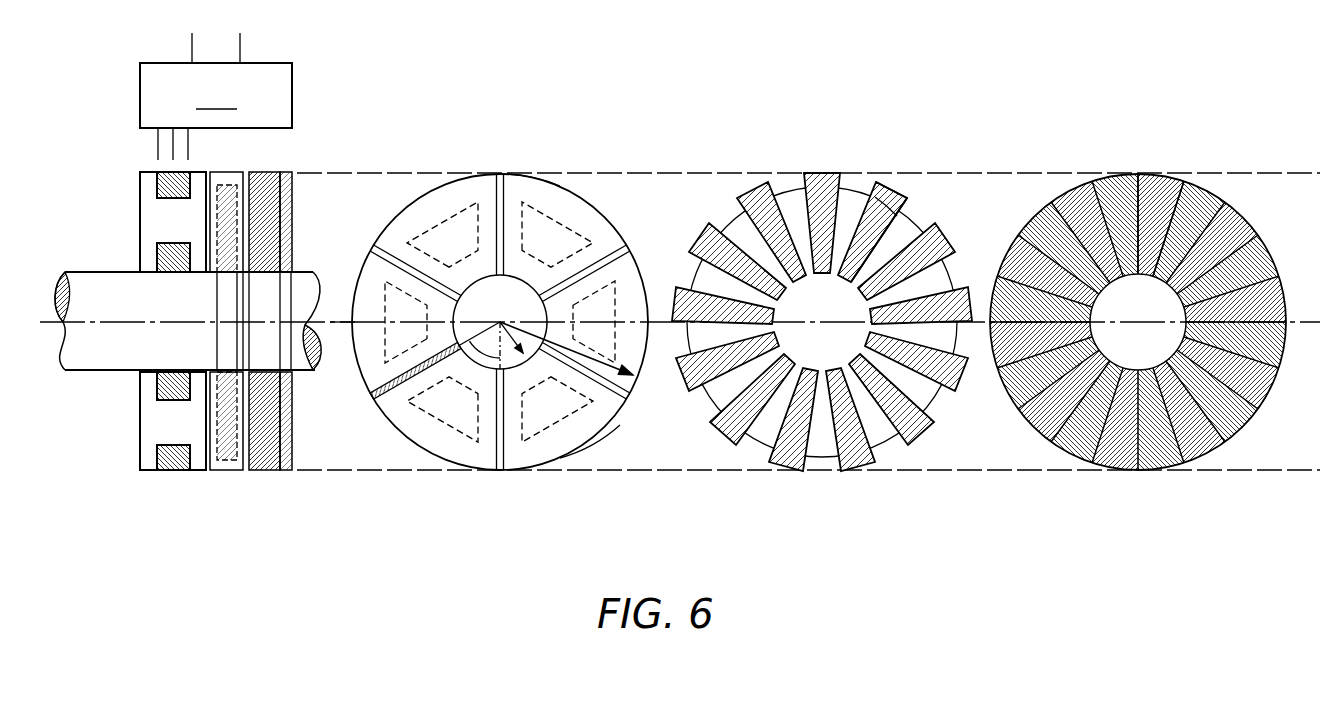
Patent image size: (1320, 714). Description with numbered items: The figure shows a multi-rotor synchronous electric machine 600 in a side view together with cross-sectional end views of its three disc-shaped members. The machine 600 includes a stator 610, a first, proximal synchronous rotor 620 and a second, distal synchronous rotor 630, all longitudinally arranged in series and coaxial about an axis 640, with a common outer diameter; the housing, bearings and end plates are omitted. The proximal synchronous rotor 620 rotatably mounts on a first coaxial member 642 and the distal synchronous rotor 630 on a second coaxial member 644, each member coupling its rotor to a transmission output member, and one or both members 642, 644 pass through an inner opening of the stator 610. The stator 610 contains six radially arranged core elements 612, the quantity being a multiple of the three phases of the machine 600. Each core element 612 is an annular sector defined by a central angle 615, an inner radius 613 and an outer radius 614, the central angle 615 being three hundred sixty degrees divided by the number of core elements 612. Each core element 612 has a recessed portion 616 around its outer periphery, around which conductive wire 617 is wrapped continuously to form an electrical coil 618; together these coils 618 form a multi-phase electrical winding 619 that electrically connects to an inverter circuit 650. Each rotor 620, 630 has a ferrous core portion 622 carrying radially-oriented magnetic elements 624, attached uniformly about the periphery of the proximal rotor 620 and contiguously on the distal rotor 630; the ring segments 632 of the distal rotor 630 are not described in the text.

The multi-rotor synchronous electric machine 600 is at (313, 78).
The stator 610 is at (148, 470).
The core elements 612 is at (360, 277).
The inner radius 613 is at (508, 333).
The outer radius 614 is at (603, 372).
The central angle 615 is at (378, 400).
The recessed portion 616 is at (157, 445).
The conductive wire 617 is at (172, 470).
The electrical coil 618 is at (586, 444).
The multi-phase electrical winding 619 is at (528, 172).
The proximal synchronous rotor 620 is at (222, 470).
The ferrous core portion 622 is at (897, 216).
The magnetic elements 624 is at (897, 188).
The distal synchronous rotor 630 is at (268, 470).
The ring segments 632 is at (1272, 240).
The axis 640 is at (343, 323).
The first coaxial member 642 is at (118, 272).
The second coaxial member 644 is at (303, 270).
The inverter circuit 650 is at (216, 96).